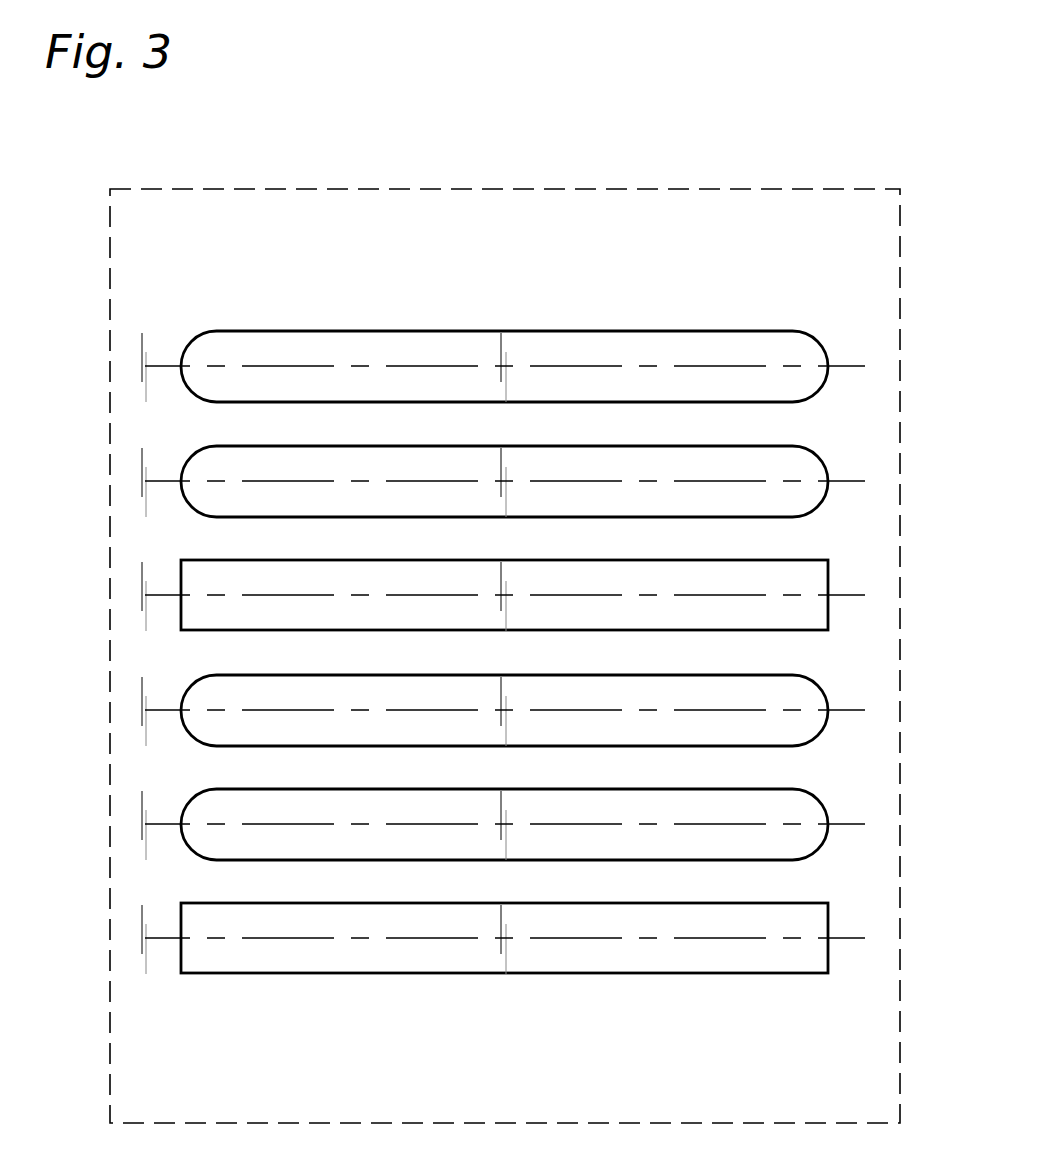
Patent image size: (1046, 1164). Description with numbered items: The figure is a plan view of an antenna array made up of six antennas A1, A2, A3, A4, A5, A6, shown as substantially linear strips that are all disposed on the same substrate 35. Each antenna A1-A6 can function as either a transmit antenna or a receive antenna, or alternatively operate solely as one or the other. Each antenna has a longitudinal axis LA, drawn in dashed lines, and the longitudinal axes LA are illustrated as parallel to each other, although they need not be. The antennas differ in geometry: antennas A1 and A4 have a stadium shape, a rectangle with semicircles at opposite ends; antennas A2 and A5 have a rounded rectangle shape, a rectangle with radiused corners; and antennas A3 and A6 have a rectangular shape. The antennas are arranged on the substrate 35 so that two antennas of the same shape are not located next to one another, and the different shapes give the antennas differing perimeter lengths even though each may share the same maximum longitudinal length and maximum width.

The substrate 35 is at (345, 228).
The antenna A1 is at (190, 343).
The antenna A2 is at (190, 458).
The antenna A3 is at (181, 573).
The antenna A4 is at (190, 686).
The antenna A5 is at (190, 800).
The antenna A6 is at (181, 917).
The longitudinal axis LA is at (843, 367).